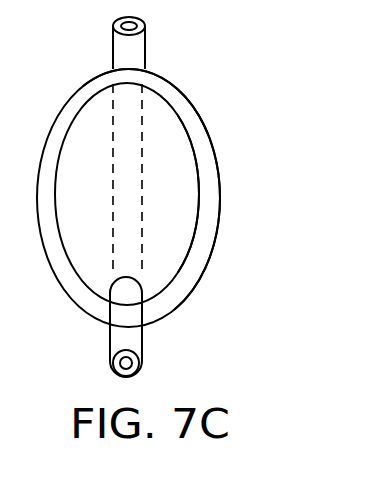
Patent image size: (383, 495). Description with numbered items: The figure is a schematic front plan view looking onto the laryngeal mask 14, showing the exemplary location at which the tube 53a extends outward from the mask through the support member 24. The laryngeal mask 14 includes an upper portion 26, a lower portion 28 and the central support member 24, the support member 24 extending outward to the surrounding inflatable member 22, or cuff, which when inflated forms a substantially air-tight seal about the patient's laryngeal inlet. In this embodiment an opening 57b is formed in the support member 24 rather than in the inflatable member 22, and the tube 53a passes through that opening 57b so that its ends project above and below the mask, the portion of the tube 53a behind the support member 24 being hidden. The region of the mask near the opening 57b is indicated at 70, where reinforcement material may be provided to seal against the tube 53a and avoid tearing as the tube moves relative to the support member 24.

The laryngeal mask 14 is at (185, 108).
The inflatable member 22 is at (203, 153).
The central support member 24 is at (182, 198).
The upper portion 26 is at (165, 78).
The lower portion 28 is at (175, 293).
The tube 53a is at (137, 195).
The opening 57b is at (109, 288).
The ring assembly 70 is at (148, 191).